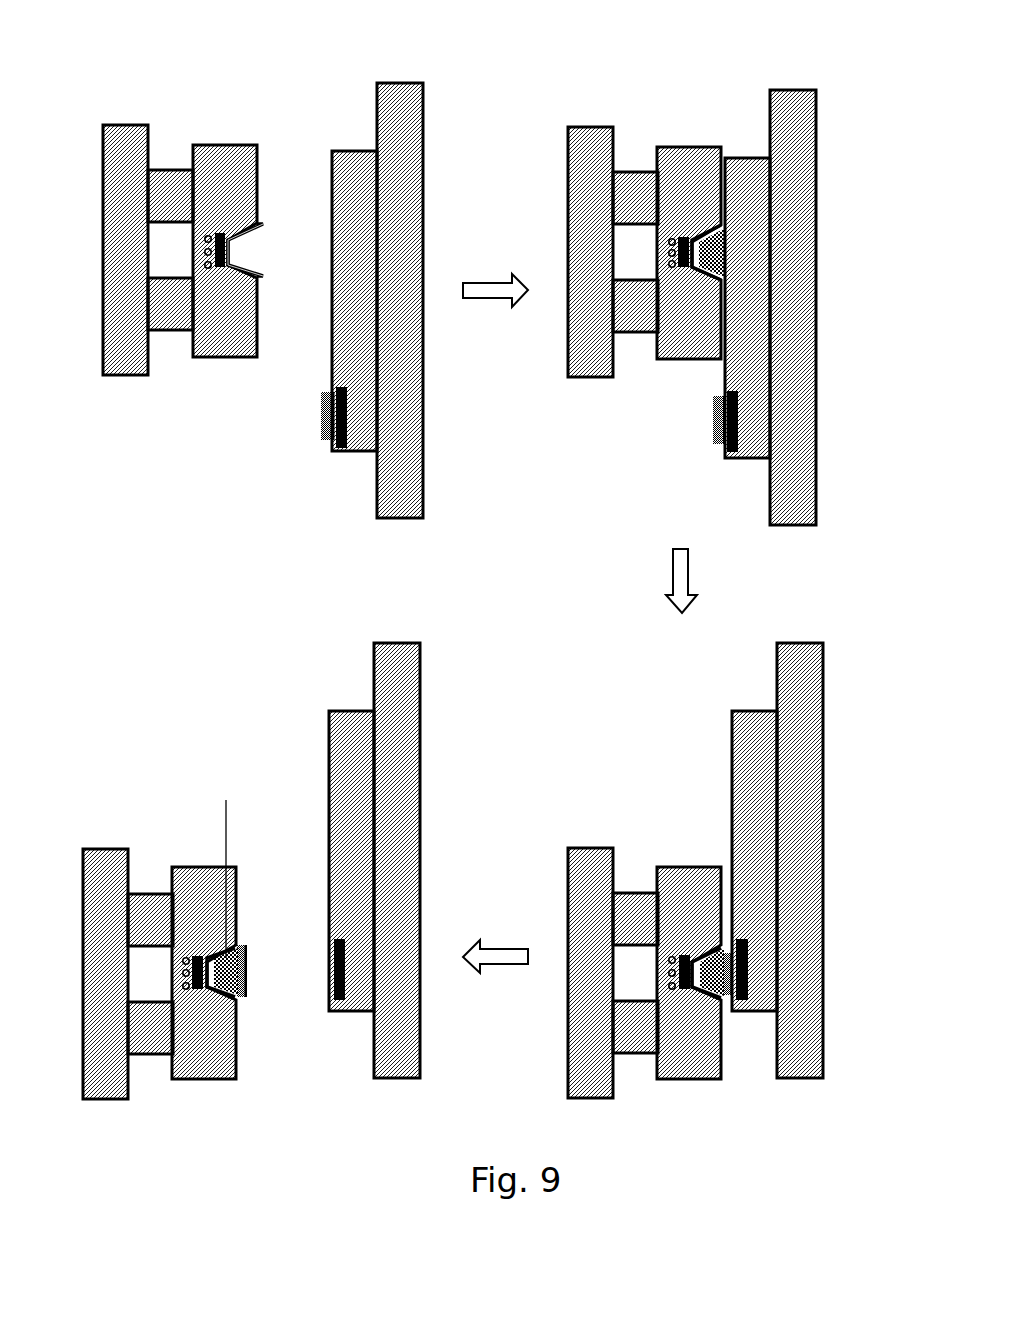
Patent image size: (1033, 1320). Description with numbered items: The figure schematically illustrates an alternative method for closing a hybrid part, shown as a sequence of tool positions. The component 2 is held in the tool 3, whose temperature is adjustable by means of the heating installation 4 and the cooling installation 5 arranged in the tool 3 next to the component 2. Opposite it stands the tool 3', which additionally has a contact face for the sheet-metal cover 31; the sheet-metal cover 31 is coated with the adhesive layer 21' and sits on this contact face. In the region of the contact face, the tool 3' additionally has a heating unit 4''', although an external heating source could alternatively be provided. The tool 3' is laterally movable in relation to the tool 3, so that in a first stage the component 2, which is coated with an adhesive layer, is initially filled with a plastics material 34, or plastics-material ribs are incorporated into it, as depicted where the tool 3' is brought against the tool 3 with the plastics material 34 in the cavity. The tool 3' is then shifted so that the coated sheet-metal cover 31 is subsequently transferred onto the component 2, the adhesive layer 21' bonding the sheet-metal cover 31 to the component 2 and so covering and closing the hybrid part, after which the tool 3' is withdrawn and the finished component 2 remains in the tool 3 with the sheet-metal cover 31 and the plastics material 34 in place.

The component 2 is at (263, 222).
The tool 3 is at (225, 194).
The tool 3' is at (377, 264).
The heating installation 4 is at (150, 254).
The heating unit 4''' is at (420, 417).
The cooling installation 5 is at (204, 237).
The adhesive layer 21' is at (284, 694).
The sheet-metal cover 31 is at (330, 436).
The plastics material 34 is at (716, 252).